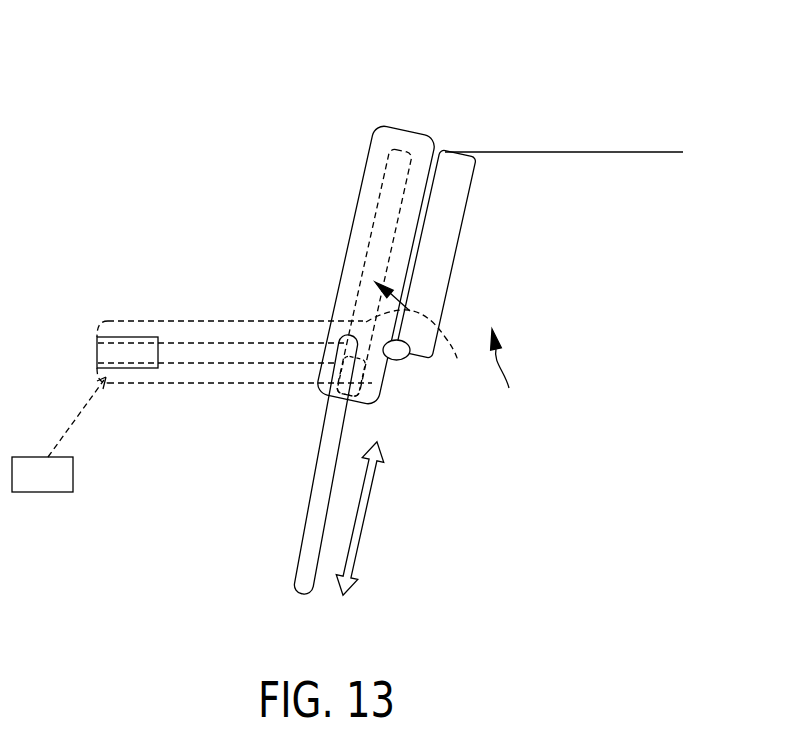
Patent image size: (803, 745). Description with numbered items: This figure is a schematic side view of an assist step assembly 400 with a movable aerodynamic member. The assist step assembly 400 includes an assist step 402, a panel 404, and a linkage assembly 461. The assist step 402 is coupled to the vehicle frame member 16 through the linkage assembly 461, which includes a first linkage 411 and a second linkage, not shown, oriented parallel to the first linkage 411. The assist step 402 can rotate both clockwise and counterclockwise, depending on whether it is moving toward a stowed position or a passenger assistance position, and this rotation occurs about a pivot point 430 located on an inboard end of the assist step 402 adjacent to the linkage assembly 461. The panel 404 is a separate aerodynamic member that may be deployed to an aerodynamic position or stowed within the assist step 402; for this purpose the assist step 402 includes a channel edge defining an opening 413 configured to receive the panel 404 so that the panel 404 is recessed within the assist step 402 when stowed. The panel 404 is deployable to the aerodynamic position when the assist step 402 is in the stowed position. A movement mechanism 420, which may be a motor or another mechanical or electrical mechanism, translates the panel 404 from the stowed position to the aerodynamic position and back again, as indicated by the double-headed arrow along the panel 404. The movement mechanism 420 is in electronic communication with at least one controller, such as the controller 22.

The assist step assembly 400 is at (135, 85).
The vehicle frame member 16 is at (528, 152).
The assist step 402 is at (358, 199).
The pivot point 430 is at (378, 381).
The first linkage 411 is at (445, 250).
The opening 413 is at (458, 362).
The linkage assembly 461 is at (507, 378).
The panel 404 is at (314, 481).
The movement mechanism 420 is at (112, 336).
The controller 22 is at (38, 492).